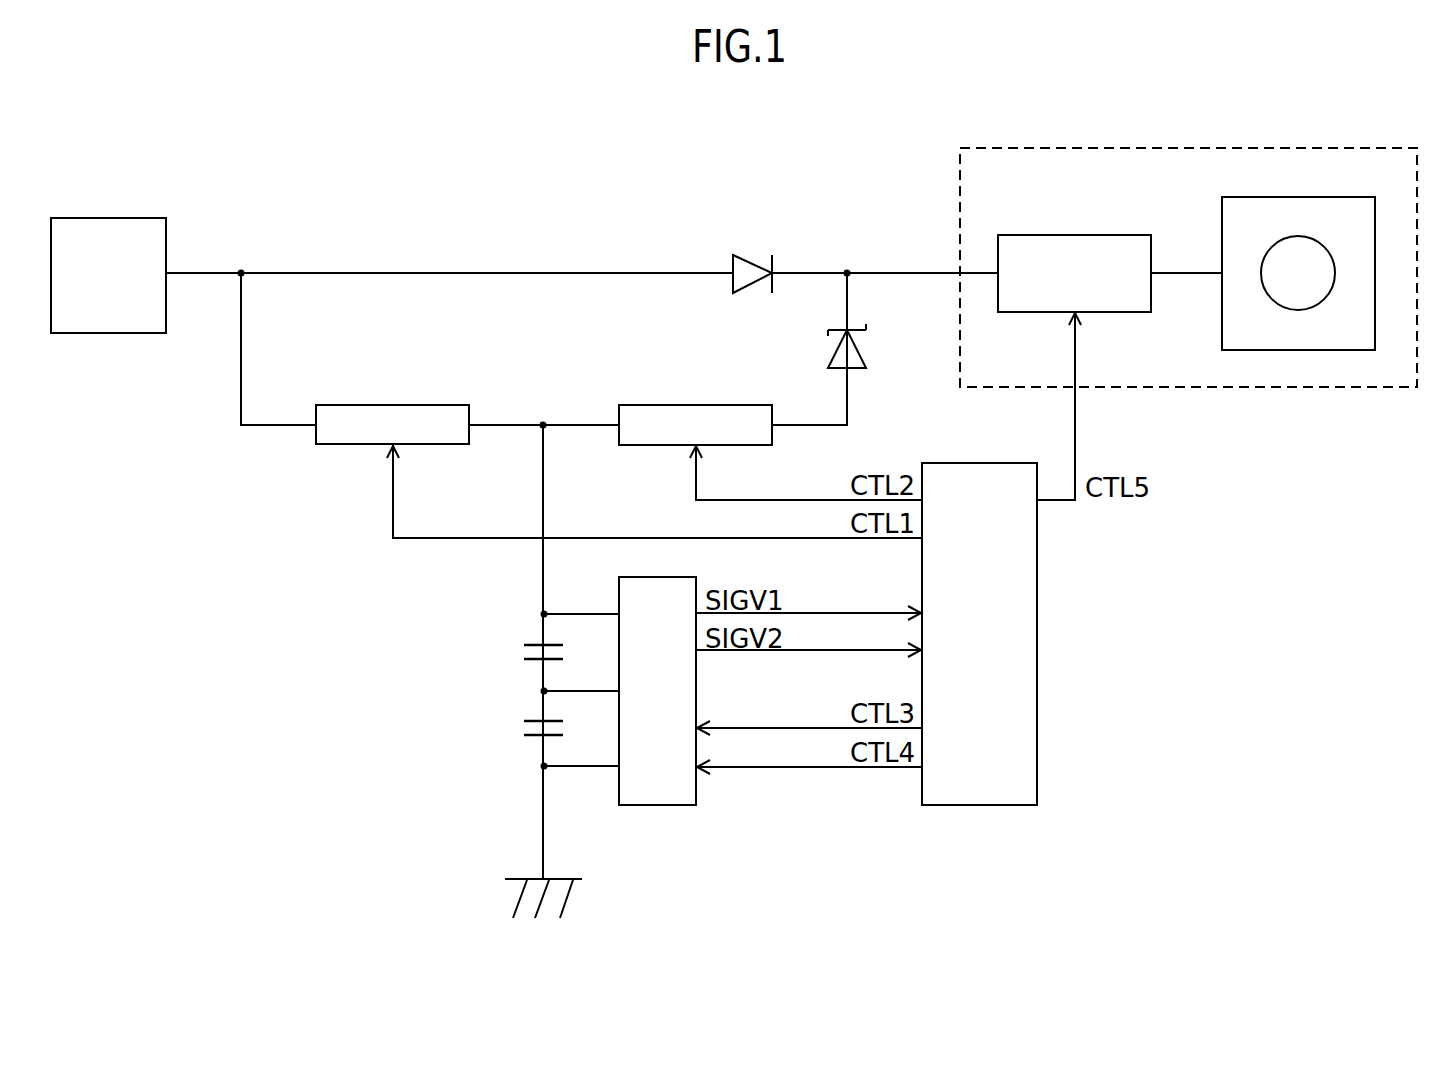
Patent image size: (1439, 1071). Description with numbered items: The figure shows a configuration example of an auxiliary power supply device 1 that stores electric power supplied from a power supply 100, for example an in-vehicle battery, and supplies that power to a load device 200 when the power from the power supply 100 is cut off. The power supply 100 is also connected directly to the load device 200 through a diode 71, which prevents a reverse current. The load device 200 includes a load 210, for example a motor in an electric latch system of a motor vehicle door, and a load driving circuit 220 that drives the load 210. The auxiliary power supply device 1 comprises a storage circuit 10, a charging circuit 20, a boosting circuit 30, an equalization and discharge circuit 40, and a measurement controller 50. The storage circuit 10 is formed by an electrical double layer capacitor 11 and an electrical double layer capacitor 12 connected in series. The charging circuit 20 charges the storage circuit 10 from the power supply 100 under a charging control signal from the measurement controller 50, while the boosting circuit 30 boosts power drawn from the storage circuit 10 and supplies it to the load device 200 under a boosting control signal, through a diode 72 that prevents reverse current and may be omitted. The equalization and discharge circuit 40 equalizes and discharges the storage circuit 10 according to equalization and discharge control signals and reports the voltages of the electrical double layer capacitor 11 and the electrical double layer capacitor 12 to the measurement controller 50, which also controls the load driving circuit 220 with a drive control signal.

The auxiliary power supply device 1 is at (140, 476).
The storage circuit 10 is at (491, 669).
The electrical double layer capacitor 11 is at (538, 642).
The electrical double layer capacitor 12 is at (517, 709).
The charging circuit 20 is at (415, 405).
The boosting circuit 30 is at (713, 405).
The equalization and discharge circuit 40 is at (660, 577).
The measurement controller 50 is at (982, 463).
The diode 71 is at (752, 258).
The diode 72 is at (868, 358).
The power supply 100 is at (112, 218).
The load device 200 is at (1258, 148).
The load 210 is at (1305, 197).
The load driving circuit 220 is at (1078, 235).